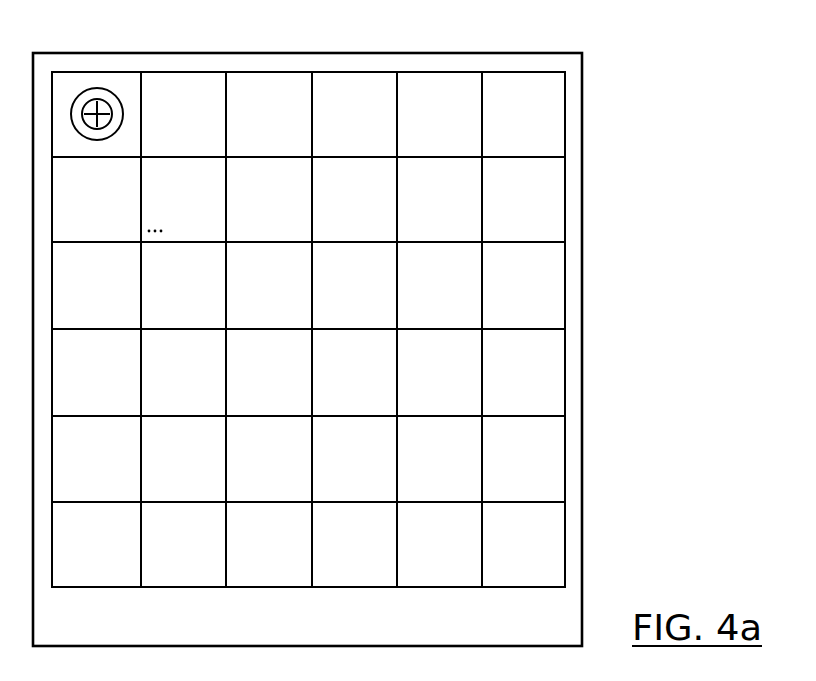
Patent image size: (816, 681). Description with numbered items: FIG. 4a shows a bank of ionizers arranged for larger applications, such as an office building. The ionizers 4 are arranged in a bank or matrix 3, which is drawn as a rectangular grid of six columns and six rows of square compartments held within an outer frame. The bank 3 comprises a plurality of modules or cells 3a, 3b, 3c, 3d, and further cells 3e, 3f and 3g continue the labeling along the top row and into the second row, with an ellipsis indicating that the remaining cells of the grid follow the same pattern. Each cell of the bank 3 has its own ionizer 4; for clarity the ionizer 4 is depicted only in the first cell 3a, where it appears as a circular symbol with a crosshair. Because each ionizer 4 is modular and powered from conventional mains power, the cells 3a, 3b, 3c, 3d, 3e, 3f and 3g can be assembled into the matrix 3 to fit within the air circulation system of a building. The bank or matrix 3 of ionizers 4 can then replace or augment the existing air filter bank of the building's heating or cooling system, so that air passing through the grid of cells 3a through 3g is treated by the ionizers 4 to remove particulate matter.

The bank or matrix 3 is at (364, 72).
The first cell 3a is at (102, 153).
The cell 3b is at (214, 153).
The cell 3c is at (301, 153).
The cell 3d is at (386, 153).
The measuring field 3e is at (471, 153).
The measuring field 3f is at (550, 153).
The measuring field 3g is at (127, 238).
The ionizer 4 is at (98, 88).